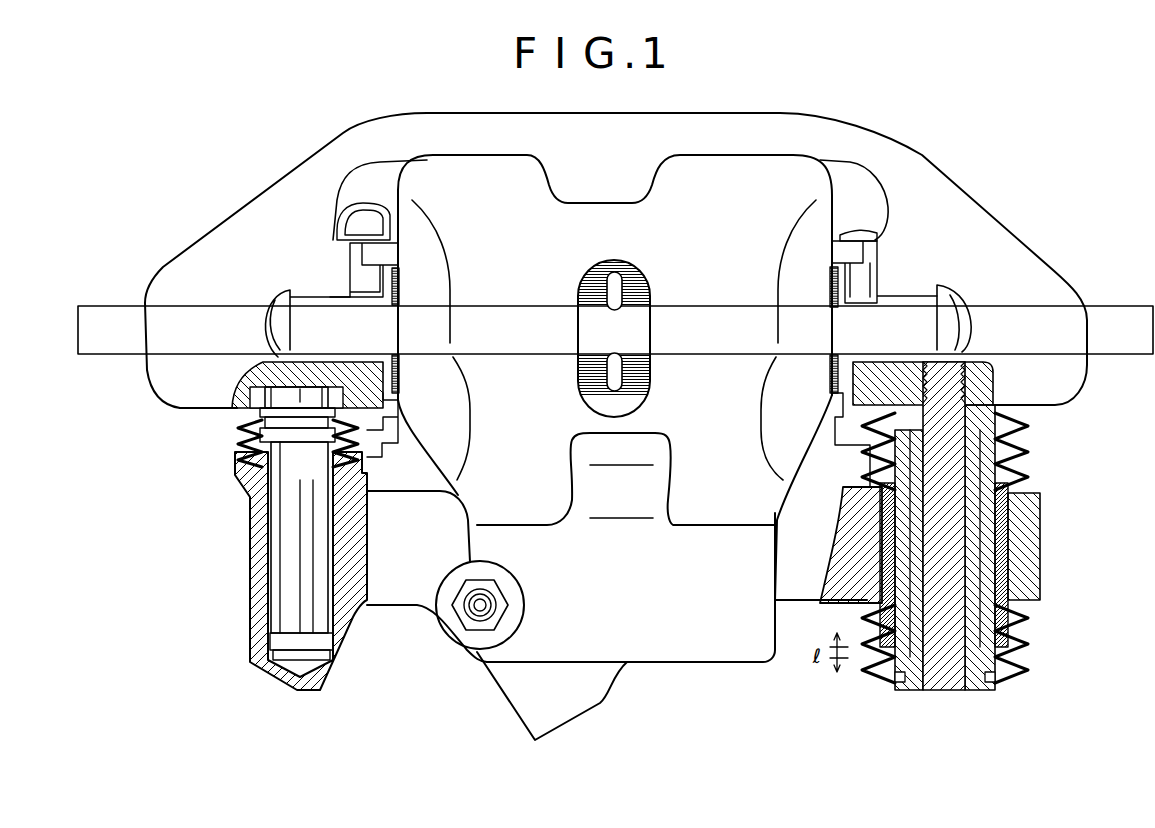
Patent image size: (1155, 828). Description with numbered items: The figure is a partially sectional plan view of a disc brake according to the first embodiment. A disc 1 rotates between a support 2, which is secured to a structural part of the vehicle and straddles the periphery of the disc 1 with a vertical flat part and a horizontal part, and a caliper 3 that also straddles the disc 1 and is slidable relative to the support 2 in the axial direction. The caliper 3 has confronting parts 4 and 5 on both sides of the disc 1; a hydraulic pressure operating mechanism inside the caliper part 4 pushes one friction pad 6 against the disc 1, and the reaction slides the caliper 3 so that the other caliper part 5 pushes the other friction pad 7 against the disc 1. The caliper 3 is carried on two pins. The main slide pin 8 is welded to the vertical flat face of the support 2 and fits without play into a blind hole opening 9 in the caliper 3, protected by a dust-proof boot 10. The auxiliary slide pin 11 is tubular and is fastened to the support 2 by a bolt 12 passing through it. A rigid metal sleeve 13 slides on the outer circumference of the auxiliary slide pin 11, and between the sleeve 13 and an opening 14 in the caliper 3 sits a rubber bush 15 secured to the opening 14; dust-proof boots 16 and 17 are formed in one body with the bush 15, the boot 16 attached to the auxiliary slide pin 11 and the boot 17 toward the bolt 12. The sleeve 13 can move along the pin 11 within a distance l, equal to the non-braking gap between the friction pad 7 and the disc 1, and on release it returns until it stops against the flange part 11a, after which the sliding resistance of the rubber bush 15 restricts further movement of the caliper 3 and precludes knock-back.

The disc 1 is at (1127, 313).
The support 2 is at (935, 185).
The caliper 3 is at (750, 663).
The caliper part 4 is at (708, 648).
The caliper part 5 is at (747, 173).
The friction pad 6 is at (640, 383).
The friction pad 7 is at (640, 283).
The main slide pin 8 is at (287, 590).
The blind hole opening 9 is at (273, 532).
The dust-proof boot 10 is at (257, 427).
The auxiliary slide pin 11 is at (973, 650).
The flange part 11a is at (988, 428).
The bolt 12 is at (947, 683).
The rigid metal sleeve 13 is at (987, 512).
The opening 14 is at (1010, 585).
The rubber bush 15 is at (1010, 547).
The dust-proof boot 16 is at (1007, 483).
The dust-proof boot 17 is at (1027, 643).